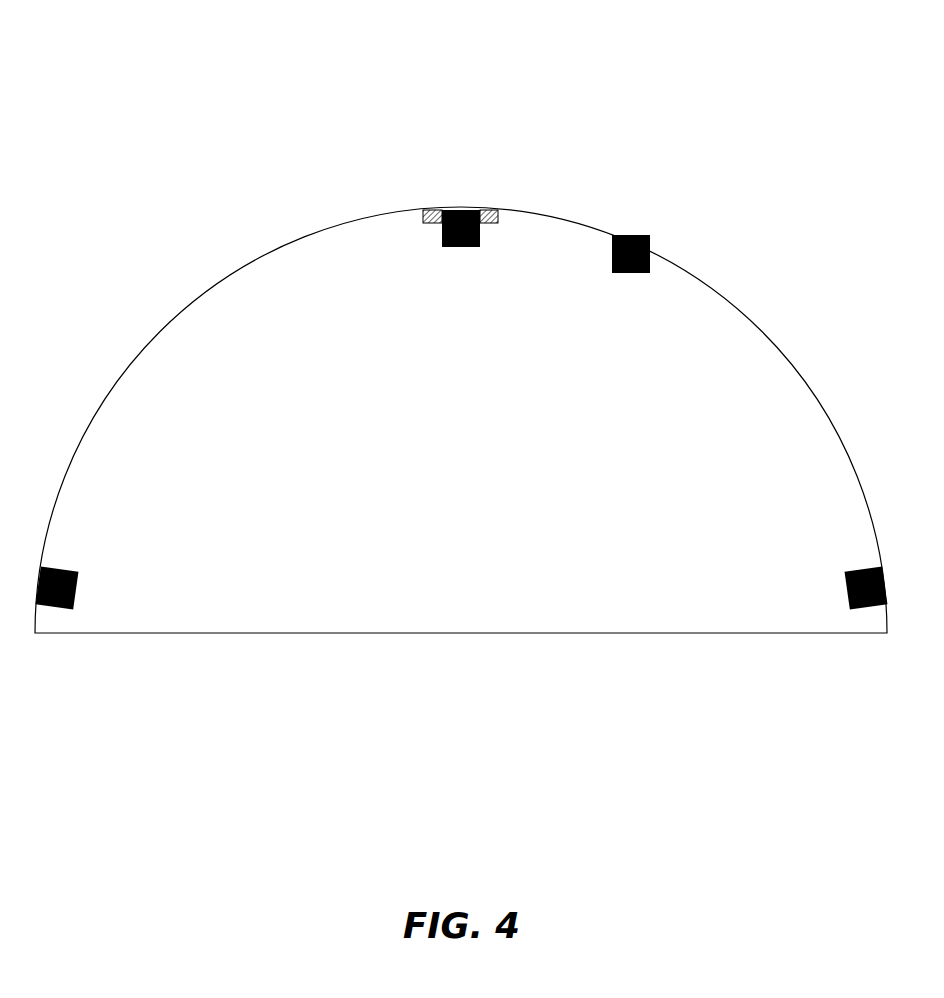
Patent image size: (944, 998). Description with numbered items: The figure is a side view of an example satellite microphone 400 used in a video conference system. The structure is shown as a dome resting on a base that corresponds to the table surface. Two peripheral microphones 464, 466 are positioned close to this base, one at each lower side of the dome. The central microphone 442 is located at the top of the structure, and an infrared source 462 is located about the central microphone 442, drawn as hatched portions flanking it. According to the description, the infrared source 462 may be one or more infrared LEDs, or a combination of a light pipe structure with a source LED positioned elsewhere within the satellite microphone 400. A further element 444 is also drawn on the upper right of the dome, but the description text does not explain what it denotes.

The satellite microphone 400 is at (700, 75).
The central microphone 442 is at (462, 263).
The second sensor element 444 is at (632, 290).
The infrared source 462 is at (478, 207).
The peripheral microphone 464 is at (75, 555).
The peripheral microphone 466 is at (860, 555).